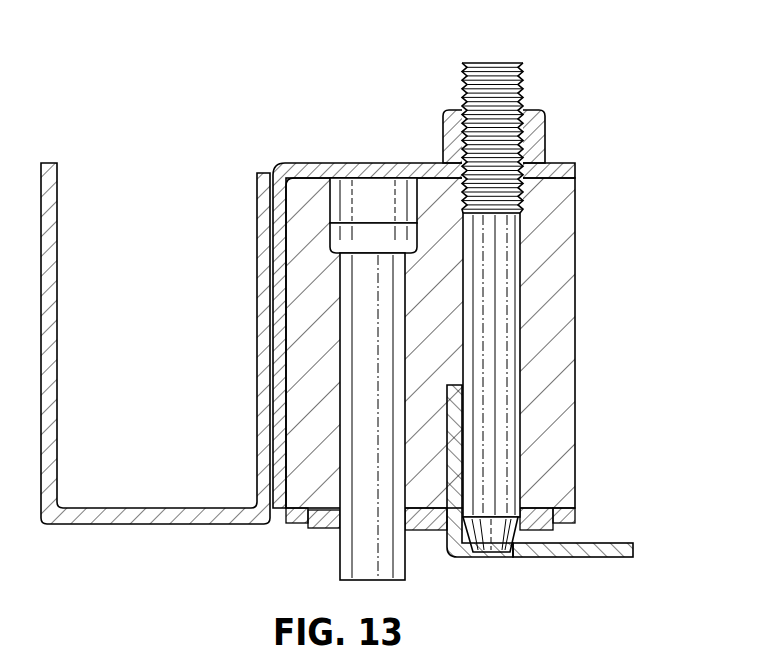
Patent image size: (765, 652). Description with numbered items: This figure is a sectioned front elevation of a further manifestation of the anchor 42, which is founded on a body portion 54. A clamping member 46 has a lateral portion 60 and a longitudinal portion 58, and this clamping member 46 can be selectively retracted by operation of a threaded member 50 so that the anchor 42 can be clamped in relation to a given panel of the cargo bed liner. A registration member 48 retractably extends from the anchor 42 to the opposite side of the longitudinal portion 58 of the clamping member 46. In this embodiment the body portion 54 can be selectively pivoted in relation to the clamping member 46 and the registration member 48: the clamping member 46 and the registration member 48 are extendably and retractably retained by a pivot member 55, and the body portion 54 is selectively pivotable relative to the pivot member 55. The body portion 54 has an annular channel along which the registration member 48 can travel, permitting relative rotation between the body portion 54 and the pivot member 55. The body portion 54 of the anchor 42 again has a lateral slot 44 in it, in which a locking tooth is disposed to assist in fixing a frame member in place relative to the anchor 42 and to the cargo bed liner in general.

The anchor 42 is at (628, 295).
The lateral slot 44 is at (115, 508).
The clamping member 46 is at (528, 457).
The registration member 48 is at (340, 552).
The threaded member 50 is at (545, 125).
The body portion 54 is at (325, 163).
The pivot member 55 is at (575, 373).
The longitudinal portion 58 is at (520, 268).
The lateral portion 60 is at (623, 543).